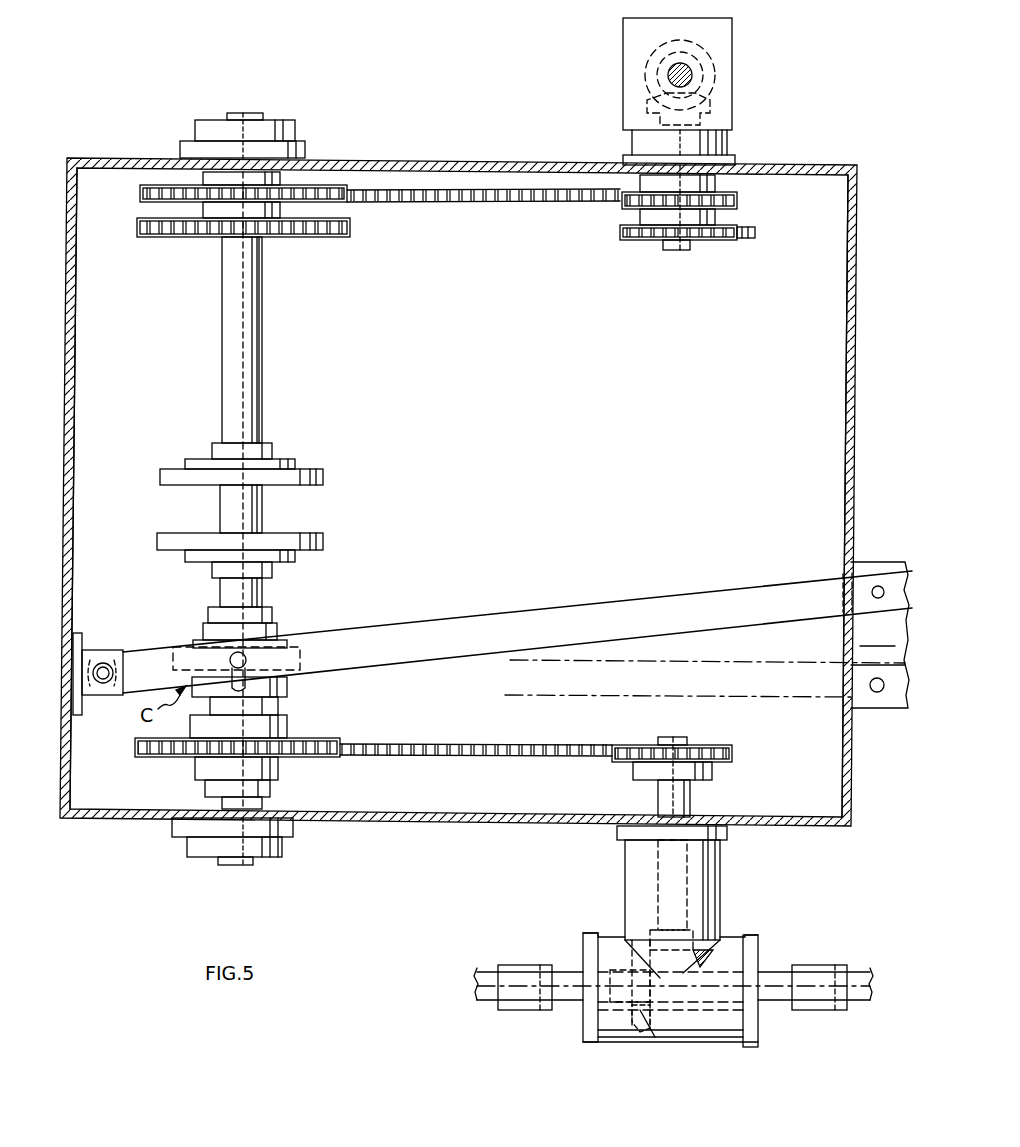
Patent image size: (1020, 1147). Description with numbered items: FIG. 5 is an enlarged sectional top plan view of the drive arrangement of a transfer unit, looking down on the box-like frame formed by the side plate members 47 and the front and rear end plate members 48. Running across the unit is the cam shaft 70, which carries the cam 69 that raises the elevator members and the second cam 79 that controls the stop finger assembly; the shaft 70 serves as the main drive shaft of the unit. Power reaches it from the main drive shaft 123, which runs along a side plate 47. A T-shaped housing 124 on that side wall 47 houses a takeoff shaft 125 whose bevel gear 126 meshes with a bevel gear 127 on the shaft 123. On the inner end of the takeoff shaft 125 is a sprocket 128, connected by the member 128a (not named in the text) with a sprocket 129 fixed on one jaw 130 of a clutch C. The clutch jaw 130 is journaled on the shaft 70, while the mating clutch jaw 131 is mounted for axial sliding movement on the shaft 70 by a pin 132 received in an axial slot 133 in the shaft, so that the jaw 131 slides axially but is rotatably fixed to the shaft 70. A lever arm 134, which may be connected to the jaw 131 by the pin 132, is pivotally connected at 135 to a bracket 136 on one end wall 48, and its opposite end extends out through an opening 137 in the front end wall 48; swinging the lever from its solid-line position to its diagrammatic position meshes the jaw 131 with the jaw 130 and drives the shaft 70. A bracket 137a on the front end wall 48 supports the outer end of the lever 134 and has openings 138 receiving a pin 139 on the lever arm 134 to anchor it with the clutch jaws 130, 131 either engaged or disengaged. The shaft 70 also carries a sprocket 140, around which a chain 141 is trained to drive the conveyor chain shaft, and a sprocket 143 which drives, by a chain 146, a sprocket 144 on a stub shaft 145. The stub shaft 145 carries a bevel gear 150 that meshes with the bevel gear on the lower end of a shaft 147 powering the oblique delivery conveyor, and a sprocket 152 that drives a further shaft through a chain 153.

The side plate member 47 is at (410, 164).
The end plate member 48 is at (76, 370).
The cam 69 is at (320, 536).
The cam shaft 70 is at (235, 866).
The second cam 79 is at (322, 484).
The main drive shaft 123 is at (780, 978).
The T-shaped housing 124 is at (716, 914).
The takeoff shaft 125 is at (688, 886).
The bevel gear 126 is at (706, 956).
The bevel gear 127 is at (652, 1026).
The sprocket 128 is at (622, 744).
The chain 128a is at (412, 745).
The sprocket 129 is at (312, 738).
The clutch jaw 130 is at (196, 765).
The mating clutch jaw 131 is at (290, 690).
The pin 132 is at (244, 655).
The axial slot 133 is at (252, 668).
The lever arm 134 is at (502, 619).
The pivotal connection 135 is at (105, 662).
The bracket 136 is at (92, 695).
The opening 137 is at (854, 560).
The bracket 137a is at (882, 635).
The openings 138 is at (877, 692).
The pin 139 is at (878, 586).
The sprocket 140 is at (300, 240).
The chain 141 is at (350, 233).
The sprocket 143 is at (320, 184).
The sprocket 144 is at (727, 191).
The stub shaft 145 is at (680, 251).
The chain 146 is at (465, 190).
The shaft 147 is at (690, 74).
The bevel gear 150 is at (715, 108).
The sprocket 152 is at (640, 243).
The chain 153 is at (750, 240).